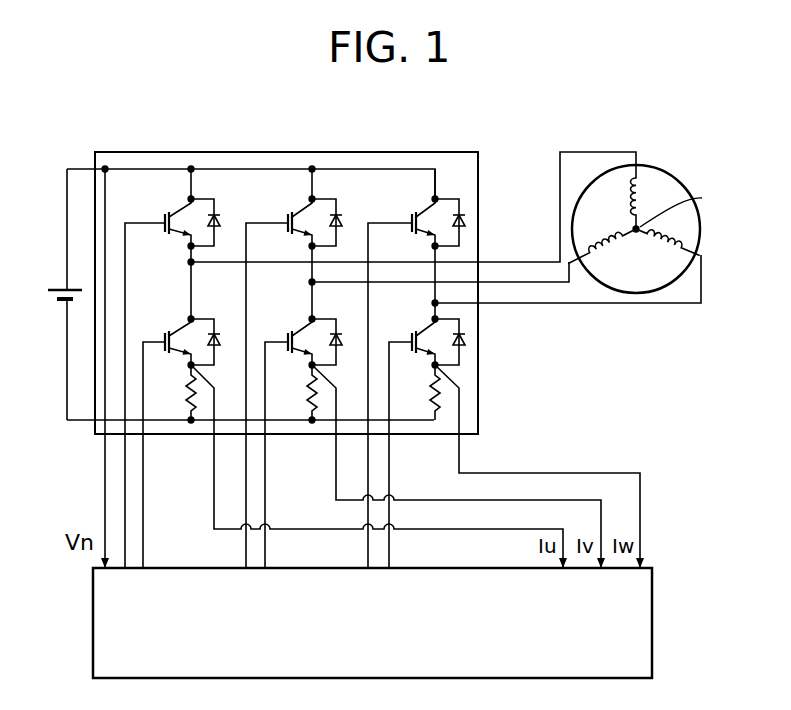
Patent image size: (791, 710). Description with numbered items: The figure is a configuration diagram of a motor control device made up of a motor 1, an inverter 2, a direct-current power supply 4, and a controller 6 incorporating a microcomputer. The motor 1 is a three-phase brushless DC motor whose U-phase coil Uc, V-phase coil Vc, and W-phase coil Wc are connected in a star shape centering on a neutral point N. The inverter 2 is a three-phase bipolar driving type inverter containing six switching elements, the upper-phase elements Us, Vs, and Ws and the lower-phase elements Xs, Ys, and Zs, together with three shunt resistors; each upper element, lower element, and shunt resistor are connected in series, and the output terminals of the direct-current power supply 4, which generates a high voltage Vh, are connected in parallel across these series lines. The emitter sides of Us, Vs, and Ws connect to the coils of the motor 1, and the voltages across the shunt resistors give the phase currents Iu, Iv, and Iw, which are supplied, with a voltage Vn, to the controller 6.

The motor 1 is at (662, 164).
The inverter 2 is at (173, 152).
The direct-current power supply 4 is at (64, 289).
The controller 6 is at (652, 590).